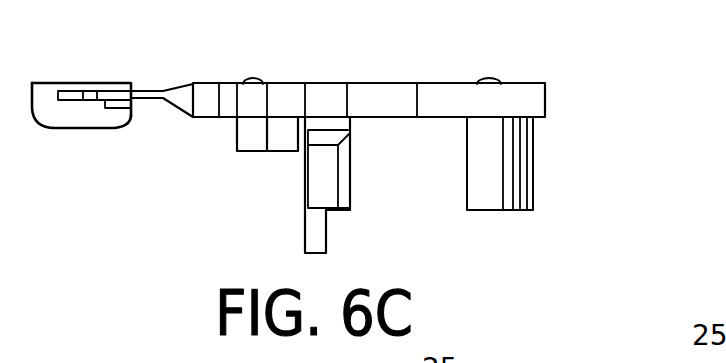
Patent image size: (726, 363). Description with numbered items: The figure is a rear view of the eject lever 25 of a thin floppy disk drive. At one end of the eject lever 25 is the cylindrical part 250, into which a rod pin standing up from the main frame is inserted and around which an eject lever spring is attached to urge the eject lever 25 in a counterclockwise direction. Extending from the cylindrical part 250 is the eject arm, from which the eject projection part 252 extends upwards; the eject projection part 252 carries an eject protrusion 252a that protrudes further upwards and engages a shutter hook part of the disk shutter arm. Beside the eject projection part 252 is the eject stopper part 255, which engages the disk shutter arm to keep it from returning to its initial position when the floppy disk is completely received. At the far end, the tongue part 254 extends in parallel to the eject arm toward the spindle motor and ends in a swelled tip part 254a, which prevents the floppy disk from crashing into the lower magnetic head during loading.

The eject lever 25 is at (548, 97).
The cylindrical part 250 is at (534, 163).
The eject projection part 252 is at (350, 173).
The eject protrusion 252a is at (316, 253).
The tongue part 254 is at (91, 90).
The tip part 254a is at (97, 130).
The eject stopper part 255 is at (253, 143).